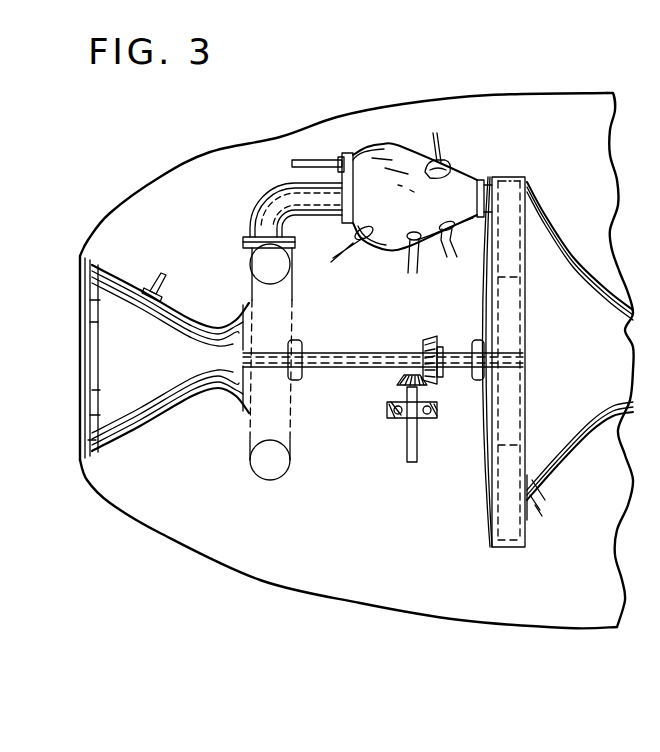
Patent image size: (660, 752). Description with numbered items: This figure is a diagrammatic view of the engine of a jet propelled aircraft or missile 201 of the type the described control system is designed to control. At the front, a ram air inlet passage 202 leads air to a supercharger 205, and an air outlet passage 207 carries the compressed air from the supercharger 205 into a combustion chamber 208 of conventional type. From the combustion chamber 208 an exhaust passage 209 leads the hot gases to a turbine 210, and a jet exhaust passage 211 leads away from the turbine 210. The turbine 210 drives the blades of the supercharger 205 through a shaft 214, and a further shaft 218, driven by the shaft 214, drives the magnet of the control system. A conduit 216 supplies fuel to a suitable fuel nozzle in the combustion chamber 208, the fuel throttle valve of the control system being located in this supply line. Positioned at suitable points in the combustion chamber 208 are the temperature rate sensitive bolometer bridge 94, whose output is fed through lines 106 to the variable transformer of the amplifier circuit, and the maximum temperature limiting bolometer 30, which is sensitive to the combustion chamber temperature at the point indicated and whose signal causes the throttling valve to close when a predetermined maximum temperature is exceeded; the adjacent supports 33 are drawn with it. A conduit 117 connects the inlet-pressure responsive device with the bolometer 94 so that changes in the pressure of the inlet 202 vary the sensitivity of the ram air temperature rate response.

The jet propelled aircraft or missile 201 is at (248, 142).
The ram air inlet passage 202 is at (100, 345).
The conduit 117 is at (166, 283).
The supercharger 205 is at (253, 433).
The air outlet passage 207 is at (273, 190).
The conduit 216 is at (334, 158).
The combustion chamber 208 is at (407, 145).
The lines 106 is at (441, 140).
The partially-shielded bolometer A.C. bridge 94 is at (441, 165).
The bolometer 30 is at (440, 227).
The brackets 33 is at (360, 250).
The shaft 214 is at (360, 357).
The shaft 218 is at (407, 447).
The exhaust passage 209 is at (490, 177).
The turbine 210 is at (520, 187).
The jet exhaust passage 211 is at (547, 280).